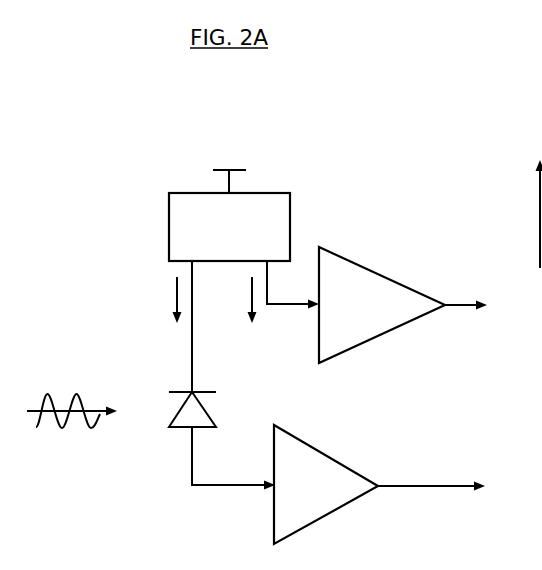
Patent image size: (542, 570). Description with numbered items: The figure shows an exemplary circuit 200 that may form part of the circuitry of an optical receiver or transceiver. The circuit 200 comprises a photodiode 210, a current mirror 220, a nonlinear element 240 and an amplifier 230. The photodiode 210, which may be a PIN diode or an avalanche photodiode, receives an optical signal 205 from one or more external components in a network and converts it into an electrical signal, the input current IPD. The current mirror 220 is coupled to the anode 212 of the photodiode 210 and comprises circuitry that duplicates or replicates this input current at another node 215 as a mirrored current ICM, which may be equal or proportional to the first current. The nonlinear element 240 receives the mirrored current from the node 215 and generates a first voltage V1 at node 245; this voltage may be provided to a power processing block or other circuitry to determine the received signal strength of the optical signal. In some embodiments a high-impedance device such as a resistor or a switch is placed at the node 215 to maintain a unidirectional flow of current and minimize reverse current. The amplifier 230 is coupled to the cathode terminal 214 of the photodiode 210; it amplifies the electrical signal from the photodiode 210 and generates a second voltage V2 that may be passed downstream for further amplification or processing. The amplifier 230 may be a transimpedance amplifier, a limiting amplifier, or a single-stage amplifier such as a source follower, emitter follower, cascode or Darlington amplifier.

The circuit 200 is at (153, 108).
The optical signal 205 is at (67, 395).
The photodiode 210 is at (204, 398).
The anode 212 is at (196, 392).
The cathode terminal 214 is at (184, 433).
The node 215 is at (287, 310).
The current mirror 220 is at (169, 214).
The amplifier 230 is at (340, 457).
The nonlinear element 240 is at (359, 258).
The node 245 is at (460, 300).